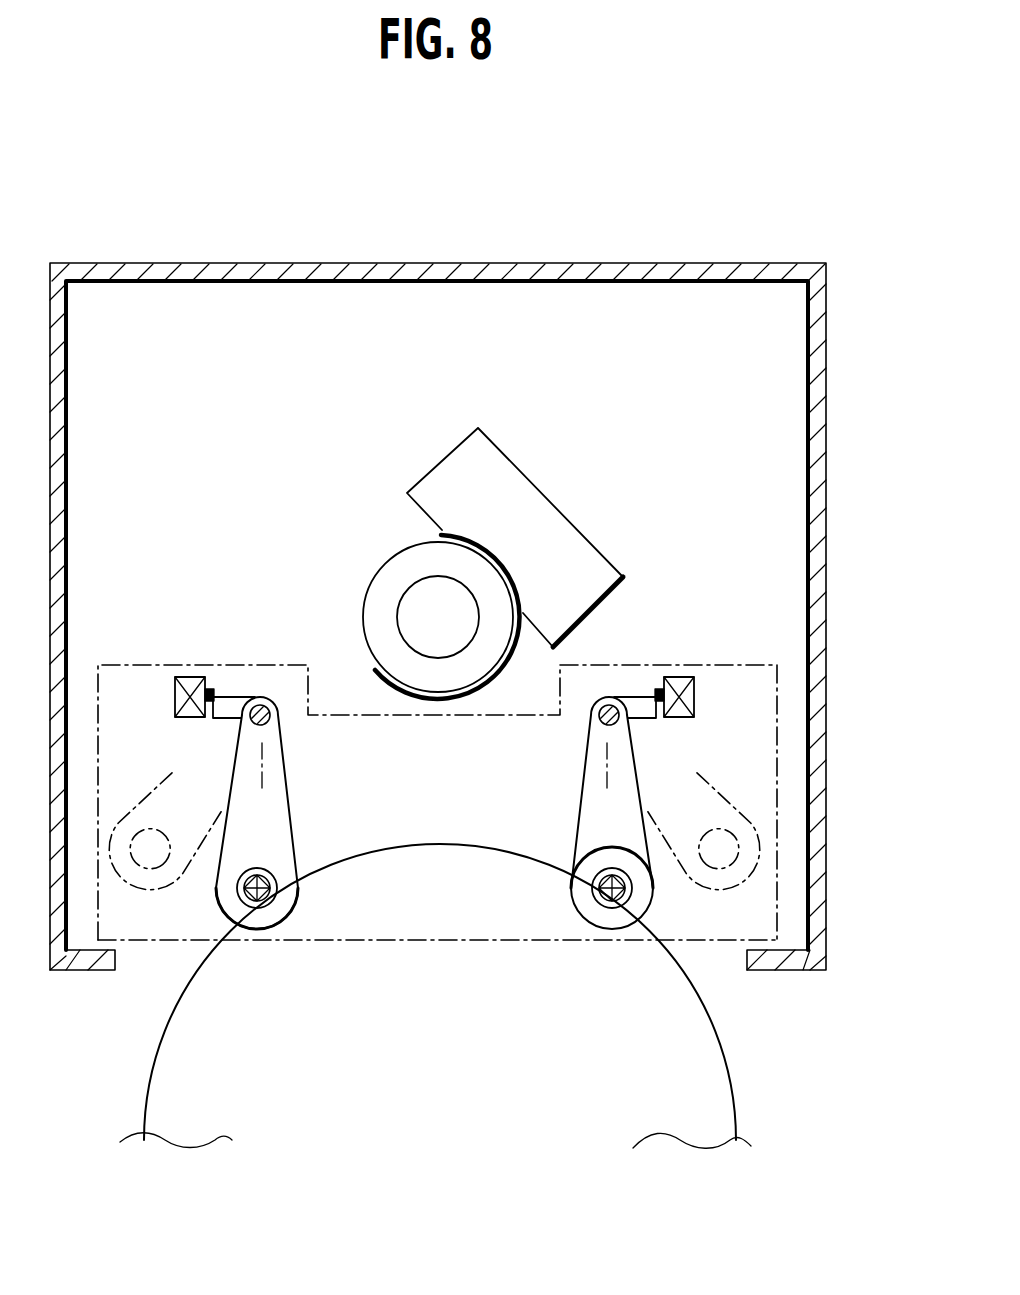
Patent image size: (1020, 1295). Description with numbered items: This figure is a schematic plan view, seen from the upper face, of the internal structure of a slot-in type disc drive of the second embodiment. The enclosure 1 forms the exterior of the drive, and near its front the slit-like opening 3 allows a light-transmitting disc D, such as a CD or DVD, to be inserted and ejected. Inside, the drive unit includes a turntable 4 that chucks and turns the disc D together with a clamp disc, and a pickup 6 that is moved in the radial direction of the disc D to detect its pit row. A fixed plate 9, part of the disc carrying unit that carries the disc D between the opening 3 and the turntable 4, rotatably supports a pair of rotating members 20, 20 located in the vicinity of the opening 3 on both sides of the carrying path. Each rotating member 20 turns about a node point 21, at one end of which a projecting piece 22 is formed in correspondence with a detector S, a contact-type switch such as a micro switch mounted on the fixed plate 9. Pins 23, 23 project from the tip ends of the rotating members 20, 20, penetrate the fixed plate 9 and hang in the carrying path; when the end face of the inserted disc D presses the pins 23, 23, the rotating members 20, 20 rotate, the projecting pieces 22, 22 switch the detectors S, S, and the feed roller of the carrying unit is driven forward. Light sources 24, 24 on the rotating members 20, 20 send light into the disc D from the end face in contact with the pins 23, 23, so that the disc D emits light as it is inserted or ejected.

The enclosure 1 is at (828, 420).
The opening 3 is at (143, 976).
The turntable 4 is at (385, 562).
The pickup 6 is at (520, 483).
The fixed plate 9 is at (437, 946).
The rotating member 20 is at (232, 783).
The node point 21 is at (262, 705).
The projecting piece 22 is at (238, 697).
The pin 23 is at (276, 930).
The light source 24 is at (247, 907).
The detector S is at (173, 698).
The disc D is at (723, 1085).